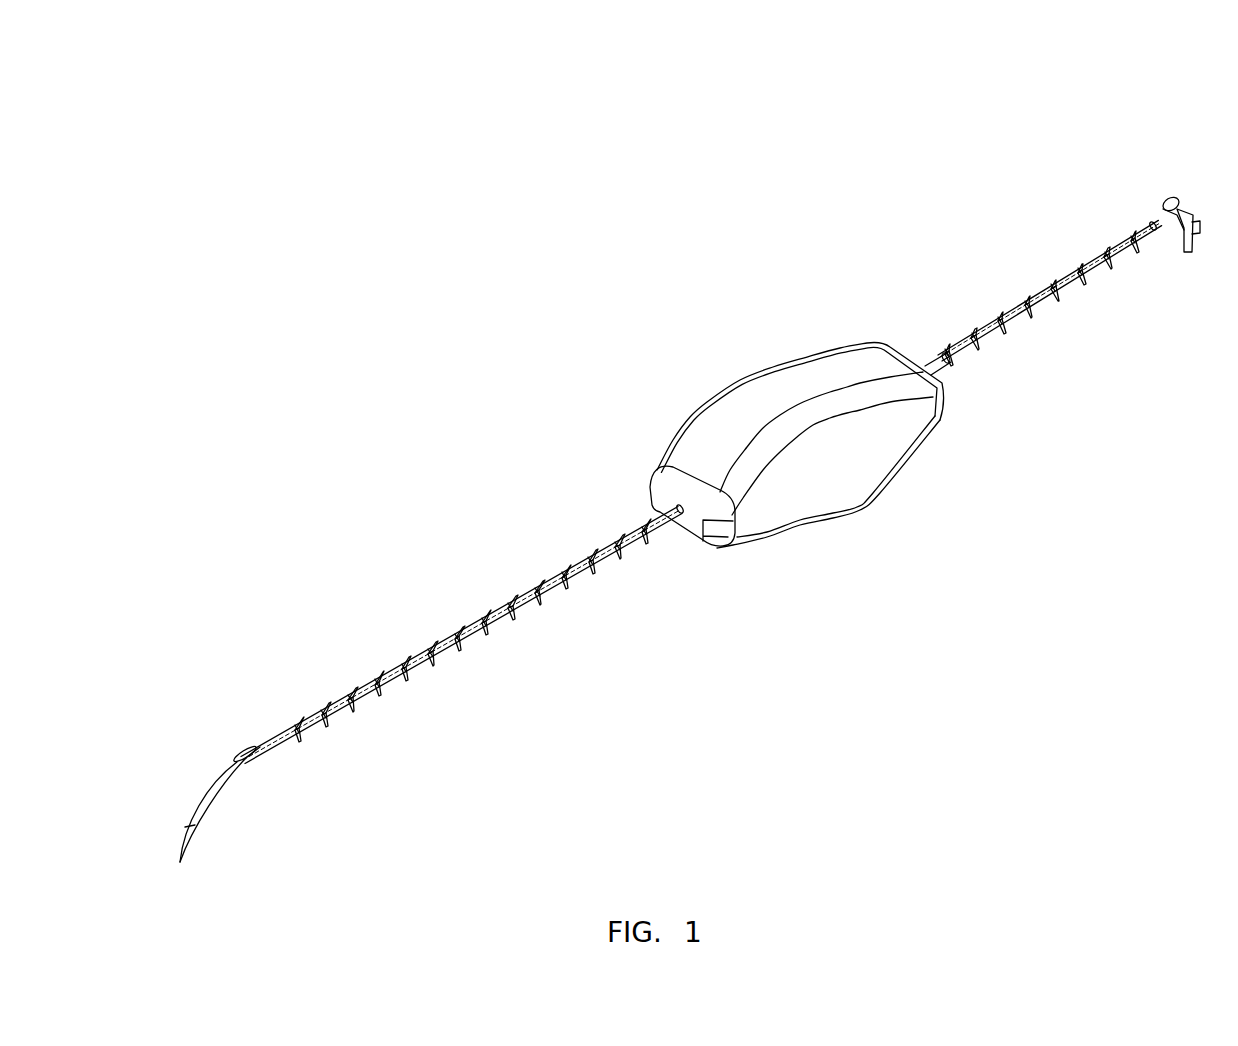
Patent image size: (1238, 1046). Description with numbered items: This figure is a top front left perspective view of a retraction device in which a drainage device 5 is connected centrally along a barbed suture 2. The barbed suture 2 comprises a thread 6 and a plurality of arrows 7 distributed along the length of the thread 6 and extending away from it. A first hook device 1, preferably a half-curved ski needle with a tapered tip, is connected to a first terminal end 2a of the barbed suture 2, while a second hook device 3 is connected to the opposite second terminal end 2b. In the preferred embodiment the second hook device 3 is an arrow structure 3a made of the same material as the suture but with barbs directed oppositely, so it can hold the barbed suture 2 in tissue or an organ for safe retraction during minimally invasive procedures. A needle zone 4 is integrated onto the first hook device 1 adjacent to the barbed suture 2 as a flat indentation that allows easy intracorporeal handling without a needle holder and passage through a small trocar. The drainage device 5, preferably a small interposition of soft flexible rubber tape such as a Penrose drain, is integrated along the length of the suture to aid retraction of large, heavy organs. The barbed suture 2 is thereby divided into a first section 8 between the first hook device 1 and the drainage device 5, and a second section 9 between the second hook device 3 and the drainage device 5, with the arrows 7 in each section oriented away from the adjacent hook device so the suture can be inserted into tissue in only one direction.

The first hook device 1 is at (182, 767).
The barbed suture 2 is at (704, 503).
The first terminal end 2a is at (277, 752).
The second terminal end 2b is at (1159, 246).
The second hook device 3 is at (1194, 155).
The arrow structure 3a is at (1185, 197).
The needle zone 4 is at (237, 757).
The drainage device 5 is at (767, 393).
The thread 6 is at (493, 615).
The plurality of arrows 7 is at (717, 497).
The first section 8 is at (380, 498).
The second section 9 is at (984, 221).